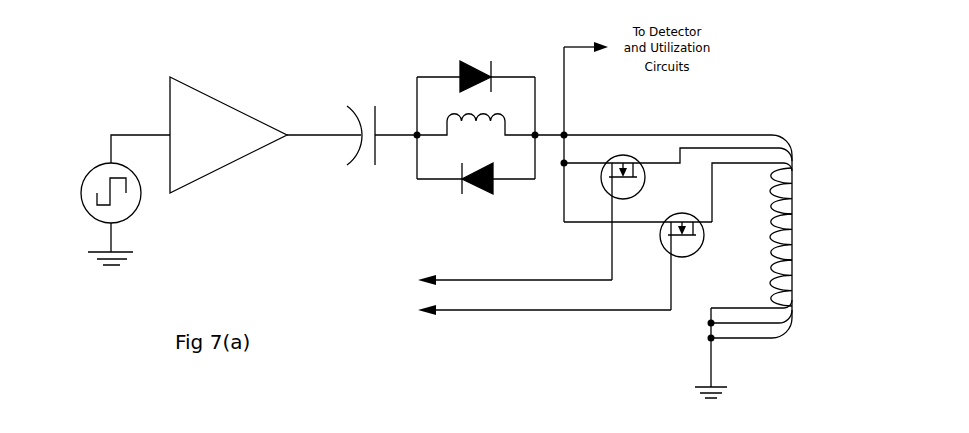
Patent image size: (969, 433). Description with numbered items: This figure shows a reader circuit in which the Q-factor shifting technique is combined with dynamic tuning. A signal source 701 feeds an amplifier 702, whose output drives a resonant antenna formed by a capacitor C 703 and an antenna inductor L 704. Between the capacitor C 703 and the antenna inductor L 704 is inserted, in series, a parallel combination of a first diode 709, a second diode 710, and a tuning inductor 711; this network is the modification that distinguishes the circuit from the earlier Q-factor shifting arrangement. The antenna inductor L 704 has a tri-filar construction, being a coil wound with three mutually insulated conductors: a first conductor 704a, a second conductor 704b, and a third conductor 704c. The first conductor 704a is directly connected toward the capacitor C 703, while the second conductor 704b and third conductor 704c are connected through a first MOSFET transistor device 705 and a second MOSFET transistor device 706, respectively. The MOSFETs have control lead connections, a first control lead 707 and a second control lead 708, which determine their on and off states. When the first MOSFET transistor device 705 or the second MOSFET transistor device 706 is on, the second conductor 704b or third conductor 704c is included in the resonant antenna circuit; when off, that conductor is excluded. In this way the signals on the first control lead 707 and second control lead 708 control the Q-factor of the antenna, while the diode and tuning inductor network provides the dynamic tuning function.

The signal source 701 is at (82, 167).
The amplifier 702 is at (227, 87).
The capacitor C 703 is at (360, 88).
The antenna inductor L 704 is at (724, 199).
The first conductor 704a is at (805, 153).
The second conductor 704b is at (805, 193).
The third conductor 704c is at (797, 245).
The MOSFET transistor device Q1 705 is at (645, 148).
The MOSFET transistor device Q2 706 is at (652, 250).
The control lead connection qH 707 is at (403, 275).
The control lead connection qF 708 is at (387, 323).
The diode D1 709 is at (482, 50).
The diode D2 710 is at (452, 183).
The inductor LT 711 is at (505, 107).